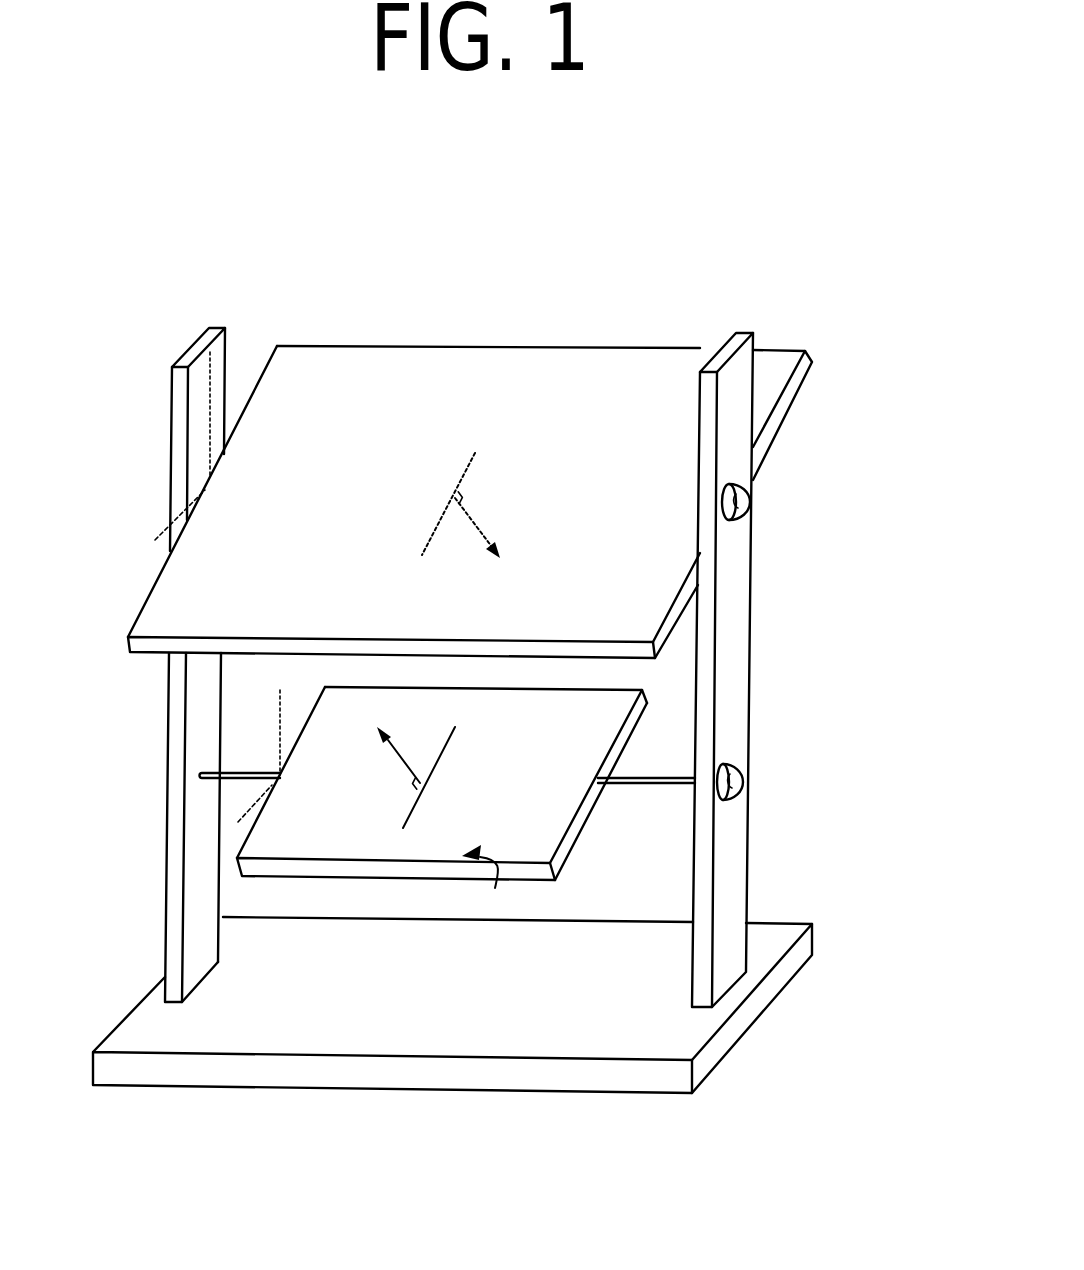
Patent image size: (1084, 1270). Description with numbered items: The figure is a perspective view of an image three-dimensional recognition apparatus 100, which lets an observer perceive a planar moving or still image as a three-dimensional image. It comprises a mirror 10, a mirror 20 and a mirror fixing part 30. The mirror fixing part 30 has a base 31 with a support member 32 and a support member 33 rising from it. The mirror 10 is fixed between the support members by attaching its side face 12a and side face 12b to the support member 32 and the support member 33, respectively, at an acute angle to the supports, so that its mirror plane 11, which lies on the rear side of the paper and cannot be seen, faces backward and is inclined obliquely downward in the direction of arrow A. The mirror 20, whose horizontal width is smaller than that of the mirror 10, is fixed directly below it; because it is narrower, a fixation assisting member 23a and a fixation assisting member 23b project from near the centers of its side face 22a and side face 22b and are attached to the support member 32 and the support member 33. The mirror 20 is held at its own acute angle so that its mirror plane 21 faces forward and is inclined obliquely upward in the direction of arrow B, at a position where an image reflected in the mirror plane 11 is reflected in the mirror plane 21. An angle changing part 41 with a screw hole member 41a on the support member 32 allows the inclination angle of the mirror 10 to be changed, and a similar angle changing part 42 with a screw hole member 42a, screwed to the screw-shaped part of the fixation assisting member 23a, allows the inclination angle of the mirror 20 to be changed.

The image three-dimensional recognition apparatus 100 is at (504, 637).
The mirror 10 is at (470, 461).
The mirror plane 11 is at (808, 391).
The side face 12a is at (750, 605).
The side face 12b is at (172, 491).
The mirror 20 is at (448, 785).
The mirror plane 21 is at (483, 879).
The side face 22a is at (600, 785).
The side face 22b is at (281, 756).
The fixation assisting member 23a is at (646, 751).
The fixation assisting member 23b is at (241, 746).
The mirror fixing part 30 is at (513, 743).
The base 31 is at (452, 1037).
The support member 32 is at (754, 670).
The support member 33 is at (155, 665).
The angle changing part 41 is at (781, 484).
The screw hole member 41a is at (787, 522).
The angle changing part 42 is at (778, 774).
The screw hole member 42a is at (783, 803).